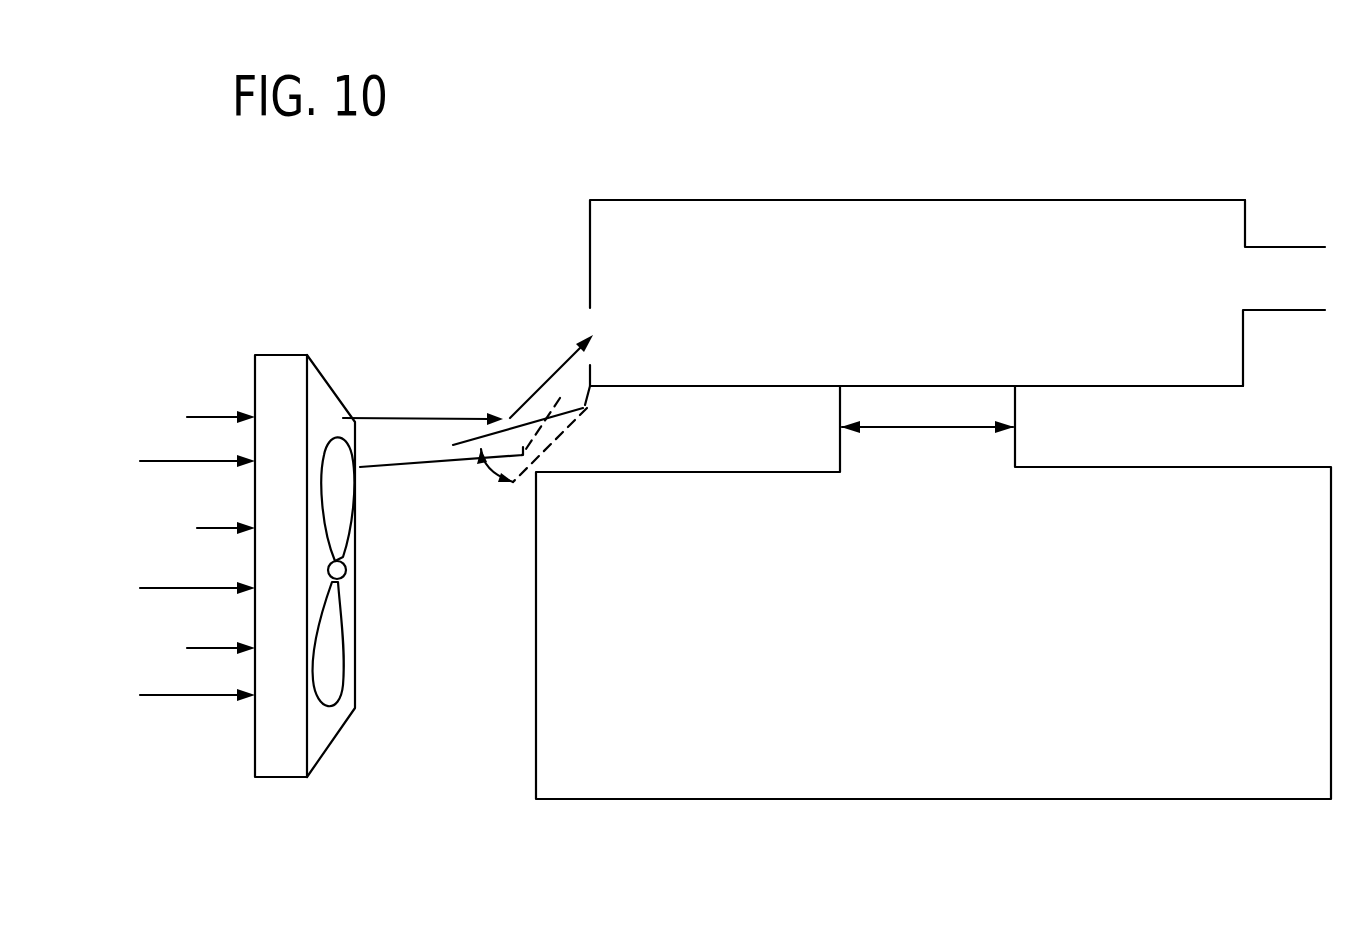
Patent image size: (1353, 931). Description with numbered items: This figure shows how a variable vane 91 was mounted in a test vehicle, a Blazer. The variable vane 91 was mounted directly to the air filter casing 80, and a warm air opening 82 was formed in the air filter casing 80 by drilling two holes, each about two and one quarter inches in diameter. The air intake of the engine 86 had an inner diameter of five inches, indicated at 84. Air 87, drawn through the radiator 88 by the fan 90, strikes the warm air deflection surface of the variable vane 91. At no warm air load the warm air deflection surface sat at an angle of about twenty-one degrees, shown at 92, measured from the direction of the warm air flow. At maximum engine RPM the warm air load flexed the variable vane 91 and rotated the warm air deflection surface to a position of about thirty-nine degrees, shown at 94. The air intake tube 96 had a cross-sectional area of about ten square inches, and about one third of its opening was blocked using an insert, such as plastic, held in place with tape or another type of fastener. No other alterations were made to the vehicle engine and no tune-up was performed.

The air filter casing 80 is at (833, 201).
The warm air opening 82 is at (593, 327).
The inner diameter of the air intake 84 is at (920, 428).
The engine 86 is at (1010, 626).
The air 87 is at (157, 459).
The radiator 88 is at (277, 777).
The fan 90 is at (343, 663).
The variable vane 91 is at (590, 400).
The deflection surface angle at no warm air load 92 is at (478, 443).
The deflection surface position at maximum engine RPM 94 is at (513, 482).
The air intake tube 96 is at (1297, 247).